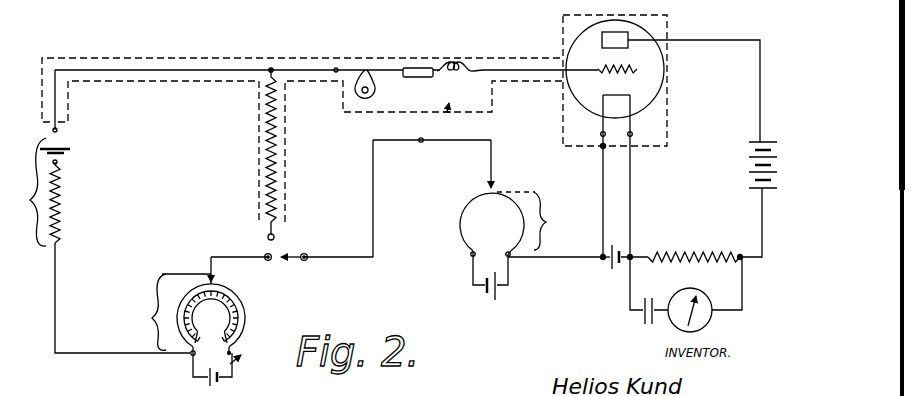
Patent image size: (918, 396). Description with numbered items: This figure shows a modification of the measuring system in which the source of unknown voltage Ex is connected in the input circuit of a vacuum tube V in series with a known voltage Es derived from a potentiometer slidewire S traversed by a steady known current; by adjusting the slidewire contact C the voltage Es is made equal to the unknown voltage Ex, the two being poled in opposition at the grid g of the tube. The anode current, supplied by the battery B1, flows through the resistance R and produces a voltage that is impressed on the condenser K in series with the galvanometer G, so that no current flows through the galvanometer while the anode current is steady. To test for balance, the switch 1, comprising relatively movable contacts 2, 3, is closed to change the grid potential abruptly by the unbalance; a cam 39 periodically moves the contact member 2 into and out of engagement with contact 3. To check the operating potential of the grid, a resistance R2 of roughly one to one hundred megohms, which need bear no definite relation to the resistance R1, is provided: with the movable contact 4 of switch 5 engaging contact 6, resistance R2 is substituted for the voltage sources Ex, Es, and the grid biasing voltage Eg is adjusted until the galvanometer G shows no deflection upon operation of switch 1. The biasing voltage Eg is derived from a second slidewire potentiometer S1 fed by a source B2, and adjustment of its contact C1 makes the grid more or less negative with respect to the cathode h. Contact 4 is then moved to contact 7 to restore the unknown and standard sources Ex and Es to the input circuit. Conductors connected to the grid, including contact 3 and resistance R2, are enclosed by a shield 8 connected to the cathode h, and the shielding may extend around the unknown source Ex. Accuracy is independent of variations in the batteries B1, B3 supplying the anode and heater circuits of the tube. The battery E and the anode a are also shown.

The shield 8 is at (186, 60).
The battery E is at (63, 157).
The source of unknown voltage Ex is at (25, 192).
The resistance R1 is at (62, 202).
The resistance R2 is at (282, 162).
The contact 6 is at (268, 237).
The switch 5 is at (323, 249).
The movable contact 4 is at (292, 262).
The contact 7 is at (268, 262).
The slidewire contact C is at (214, 284).
The known voltage Es is at (142, 312).
The potentiometer slidewire S is at (240, 323).
The cam 39 is at (376, 91).
The contact member 2 is at (421, 140).
The contact 3 is at (460, 74).
The switch 1 is at (449, 102).
The contact C1 is at (497, 182).
The second slidewire potentiometer S1 is at (462, 214).
The grid biasing voltage Eg is at (534, 221).
The source B2 is at (500, 293).
The heater source B3 is at (612, 270).
The vacuum tube V is at (664, 108).
The anode a is at (601, 44).
The grid g is at (607, 78).
The cathode h is at (630, 94).
The battery B1 is at (748, 157).
The resistance R is at (686, 254).
The condenser K is at (642, 318).
The galvanometer G is at (707, 296).